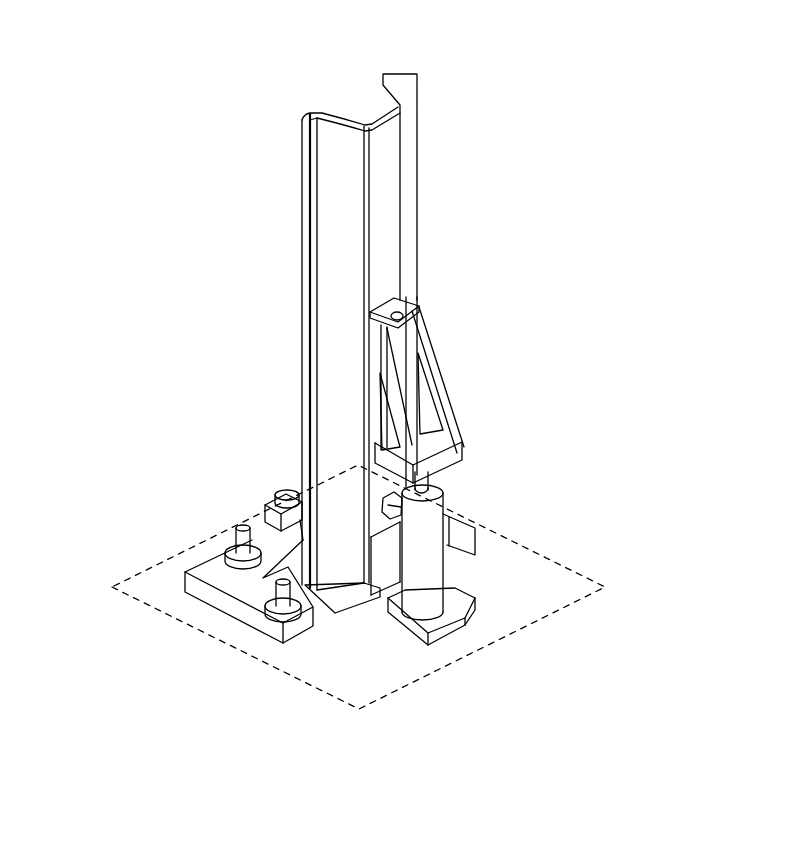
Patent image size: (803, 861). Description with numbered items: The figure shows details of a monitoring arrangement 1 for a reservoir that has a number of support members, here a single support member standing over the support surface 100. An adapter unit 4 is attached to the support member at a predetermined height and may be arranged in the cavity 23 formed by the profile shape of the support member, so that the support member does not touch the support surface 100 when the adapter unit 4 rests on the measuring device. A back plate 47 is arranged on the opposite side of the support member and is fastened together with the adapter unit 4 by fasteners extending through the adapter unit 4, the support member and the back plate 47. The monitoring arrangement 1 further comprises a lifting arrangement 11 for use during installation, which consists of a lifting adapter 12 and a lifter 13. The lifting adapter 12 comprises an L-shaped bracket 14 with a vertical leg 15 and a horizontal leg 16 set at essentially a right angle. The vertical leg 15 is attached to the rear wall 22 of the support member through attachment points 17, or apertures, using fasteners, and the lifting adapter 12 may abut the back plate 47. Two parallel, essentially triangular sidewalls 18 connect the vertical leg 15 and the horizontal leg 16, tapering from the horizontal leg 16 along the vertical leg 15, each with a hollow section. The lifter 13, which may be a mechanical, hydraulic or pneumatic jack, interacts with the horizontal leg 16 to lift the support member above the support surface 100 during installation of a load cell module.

The monitoring arrangement 1 is at (172, 247).
The adapter unit 4 is at (272, 389).
The lifting arrangement 11 is at (568, 415).
The lifting adapter 12 is at (487, 330).
The lifter 13 is at (427, 558).
The L-shaped bracket 14 is at (453, 421).
The vertical leg 15 is at (398, 305).
The horizontal leg 16 is at (450, 470).
The attachment points 17 is at (398, 327).
The sidewalls 18 is at (440, 372).
The rear wall 22 is at (385, 160).
The cavity 23 is at (367, 108).
The back plate 47 is at (381, 487).
The support surface 100 is at (560, 590).